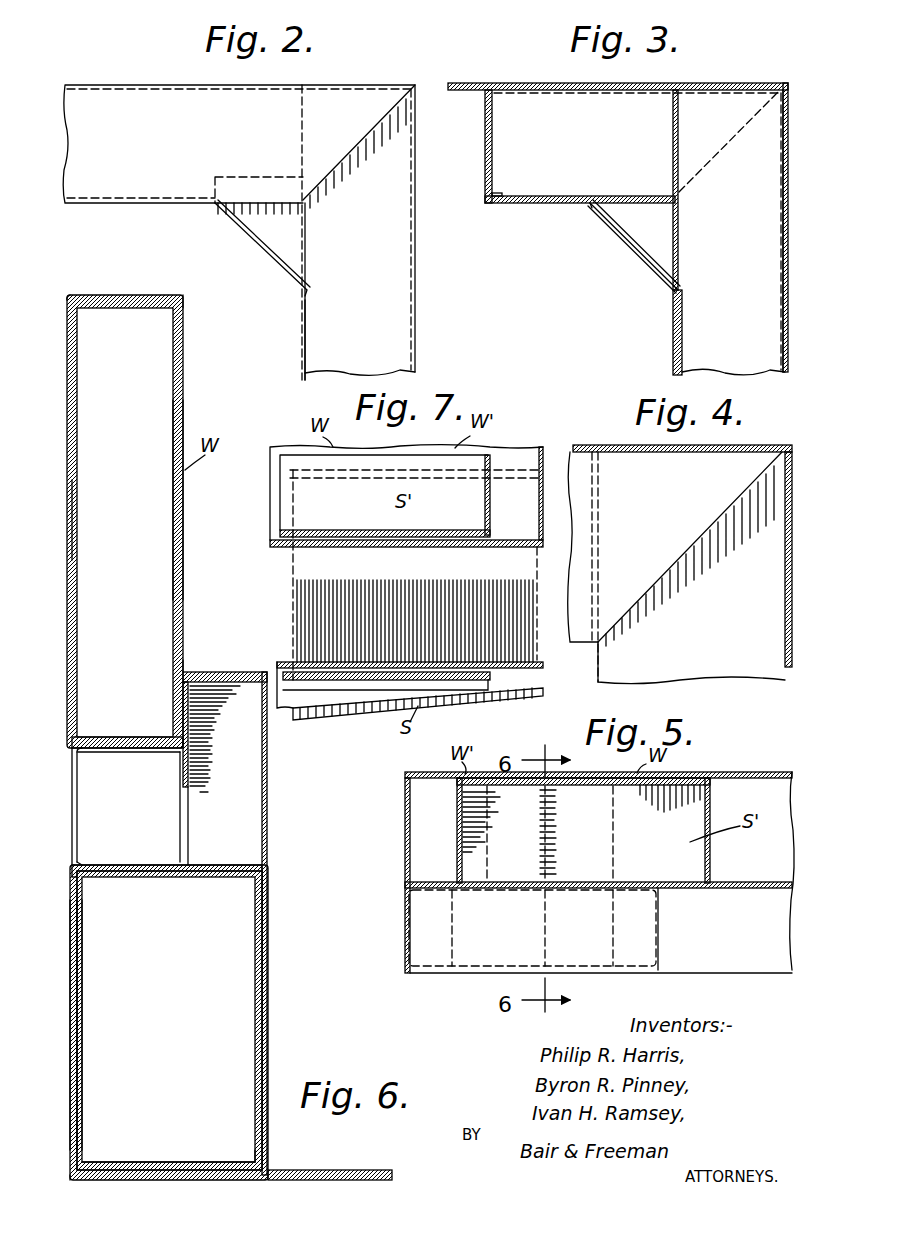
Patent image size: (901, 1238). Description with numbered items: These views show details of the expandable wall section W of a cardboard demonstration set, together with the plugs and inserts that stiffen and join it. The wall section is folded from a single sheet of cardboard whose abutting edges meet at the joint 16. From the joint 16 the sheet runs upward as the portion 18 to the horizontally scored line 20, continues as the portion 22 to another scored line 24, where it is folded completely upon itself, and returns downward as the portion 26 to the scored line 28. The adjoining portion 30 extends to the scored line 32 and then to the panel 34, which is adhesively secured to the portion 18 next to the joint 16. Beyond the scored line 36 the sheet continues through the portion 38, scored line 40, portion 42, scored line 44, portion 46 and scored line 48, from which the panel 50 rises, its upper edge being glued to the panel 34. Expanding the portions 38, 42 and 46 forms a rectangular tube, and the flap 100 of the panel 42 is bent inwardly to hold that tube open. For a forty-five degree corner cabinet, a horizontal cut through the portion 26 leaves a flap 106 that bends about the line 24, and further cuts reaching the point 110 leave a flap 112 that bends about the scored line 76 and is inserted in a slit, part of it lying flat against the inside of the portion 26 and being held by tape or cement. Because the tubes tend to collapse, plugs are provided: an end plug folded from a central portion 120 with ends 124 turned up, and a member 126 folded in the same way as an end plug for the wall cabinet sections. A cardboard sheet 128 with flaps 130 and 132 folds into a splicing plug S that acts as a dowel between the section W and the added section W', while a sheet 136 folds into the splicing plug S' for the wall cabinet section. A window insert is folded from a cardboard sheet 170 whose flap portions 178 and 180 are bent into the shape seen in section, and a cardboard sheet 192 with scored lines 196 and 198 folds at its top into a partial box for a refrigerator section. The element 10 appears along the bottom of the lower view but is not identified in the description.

In FIG. 6, the base plate 10 is at (360, 1170).
In FIG. 6, the joint 16 is at (70, 804).
In FIG. 6, the portion 18 is at (68, 528).
In FIG. 6, the scored line 20 is at (67, 296).
In FIG. 2, the portion 22 is at (239, 230).
In FIG. 6, the portion 22 is at (107, 295).
In FIG. 6, the horizontally scored line 24 is at (183, 296).
In FIG. 2, the portion 26 is at (306, 238).
In FIG. 3, the portion 26 is at (680, 225).
In FIG. 7, the portion 26 is at (270, 514).
In FIG. 5, the portion 26 is at (748, 888).
In FIG. 6, the portion 26 is at (184, 497).
In FIG. 6, the horizontally scored line 28 is at (182, 758).
In FIG. 3, the adjoining portion 30 is at (695, 229).
In FIG. 7, the adjoining portion 30 is at (277, 548).
In FIG. 5, the adjoining portion 30 is at (599, 871).
In FIG. 6, the adjoining portion 30 is at (133, 752).
In FIG. 6, the scored line 32 is at (85, 752).
In FIG. 6, the panel 34 is at (80, 826).
In FIG. 6, the horizontal scored line 36 is at (80, 860).
In FIG. 7, the portion 38 is at (293, 642).
In FIG. 4, the portion 38 is at (680, 564).
In FIG. 5, the portion 38 is at (699, 929).
In FIG. 6, the portion 38 is at (138, 862).
In FIG. 6, the scored line 40 is at (262, 855).
In FIG. 6, the portion 42 is at (256, 947).
In FIG. 6, the scored line 44 is at (263, 1162).
In FIG. 6, the portion 46 is at (176, 1170).
In FIG. 6, the scored line 48 is at (70, 1174).
In FIG. 6, the panel 50 is at (70, 1055).
In FIG. 3, the scored line 76 is at (588, 208).
In FIG. 4, the flap 100 is at (600, 555).
In FIG. 2, the flap 106 is at (274, 239).
In FIG. 2, the point 110 is at (308, 332).
In FIG. 3, the point 110 is at (683, 328).
In FIG. 2, the flap 112 is at (280, 270).
In FIG. 3, the flap 112 is at (636, 250).
In FIG. 7, the central portion 120 is at (543, 680).
In FIG. 7, the ends 124 is at (545, 664).
In FIG. 7, the member 126 is at (540, 500).
In FIG. 5, the member 126 is at (405, 836).
In FIG. 7, the cardboard sheet 128 is at (333, 712).
In FIG. 6, the flap 130 is at (84, 975).
In FIG. 6, the flap 132 is at (84, 1035).
In FIG. 7, the sheet 136 is at (410, 496).
In FIG. 5, the sheet 136 is at (583, 830).
In FIG. 6, the sheet 136 is at (174, 496).
In FIG. 3, the cardboard sheet 170 is at (462, 96).
In FIG. 3, the portion 178 is at (494, 128).
In FIG. 3, the portion 180 is at (507, 195).
In FIG. 7, the cardboard sheet 192 is at (481, 603).
In FIG. 5, the cardboard sheet 192 is at (532, 928).
In FIG. 6, the cardboard sheet 192 is at (270, 790).
In FIG. 6, the scored line 196 is at (267, 676).
In FIG. 6, the scored line 198 is at (190, 672).